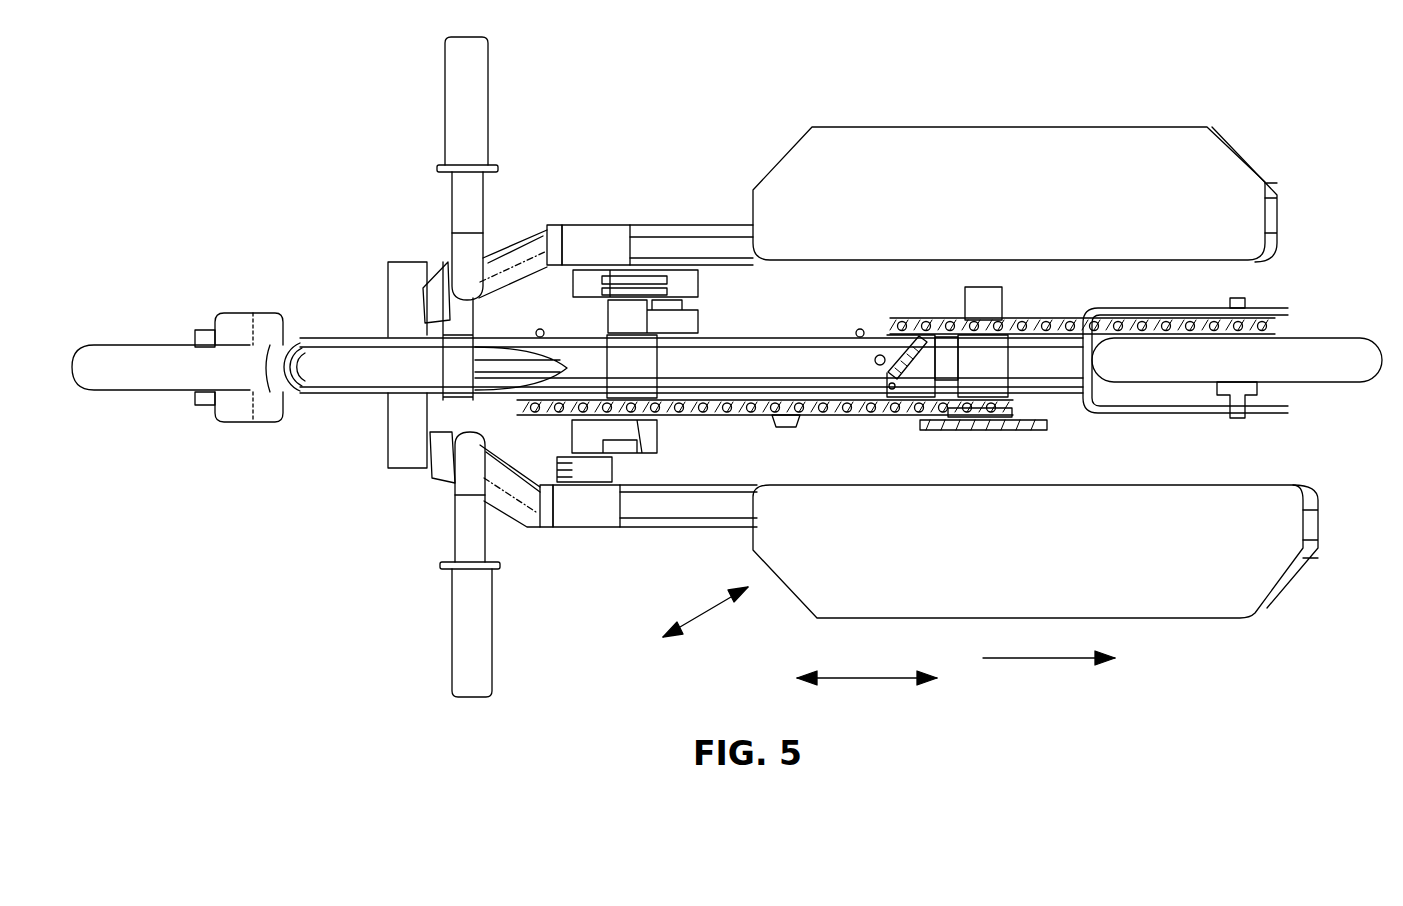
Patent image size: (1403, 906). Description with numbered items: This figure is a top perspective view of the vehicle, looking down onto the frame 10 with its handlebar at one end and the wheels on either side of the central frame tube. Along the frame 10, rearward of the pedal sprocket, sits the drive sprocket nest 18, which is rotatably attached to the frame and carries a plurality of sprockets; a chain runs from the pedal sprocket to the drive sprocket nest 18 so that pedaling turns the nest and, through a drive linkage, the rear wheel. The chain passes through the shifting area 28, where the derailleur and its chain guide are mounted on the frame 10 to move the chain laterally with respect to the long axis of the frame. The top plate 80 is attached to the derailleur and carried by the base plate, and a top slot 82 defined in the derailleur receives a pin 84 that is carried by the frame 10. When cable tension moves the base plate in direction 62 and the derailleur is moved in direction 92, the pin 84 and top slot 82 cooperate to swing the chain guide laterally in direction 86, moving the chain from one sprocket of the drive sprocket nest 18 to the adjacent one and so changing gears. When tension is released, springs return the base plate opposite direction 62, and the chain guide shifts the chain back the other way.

The frame 10 is at (735, 360).
The drive sprocket nest 18 is at (997, 432).
The shifting area 28 is at (853, 407).
The direction 62 is at (1050, 660).
The top plate 80 is at (880, 377).
The top slot 82 is at (920, 318).
The pin 84 is at (892, 370).
The direction 86 is at (710, 618).
The direction 92 is at (880, 680).